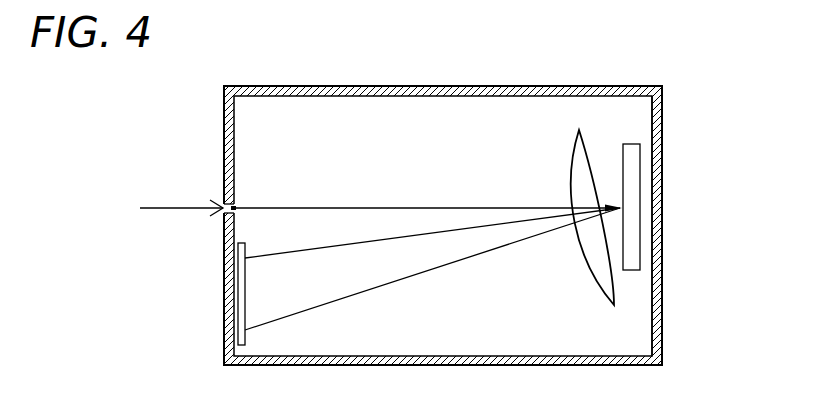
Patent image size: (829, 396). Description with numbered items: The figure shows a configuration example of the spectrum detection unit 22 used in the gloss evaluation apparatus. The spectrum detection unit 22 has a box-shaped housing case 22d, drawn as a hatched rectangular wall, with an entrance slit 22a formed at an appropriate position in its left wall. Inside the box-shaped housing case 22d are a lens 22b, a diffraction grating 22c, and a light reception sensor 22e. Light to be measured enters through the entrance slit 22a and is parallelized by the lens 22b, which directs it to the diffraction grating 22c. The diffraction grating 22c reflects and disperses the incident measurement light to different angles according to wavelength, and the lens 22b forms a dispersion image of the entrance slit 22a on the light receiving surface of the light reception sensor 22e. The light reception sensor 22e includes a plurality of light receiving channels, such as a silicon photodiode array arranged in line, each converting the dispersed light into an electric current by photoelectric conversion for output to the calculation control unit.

The spectrum detection unit 22 is at (448, 82).
The entrance slit 22a is at (236, 207).
The lens 22b is at (585, 272).
The diffraction grating 22c is at (630, 144).
The box-shaped housing case 22d is at (662, 320).
The light reception sensor 22e is at (246, 336).